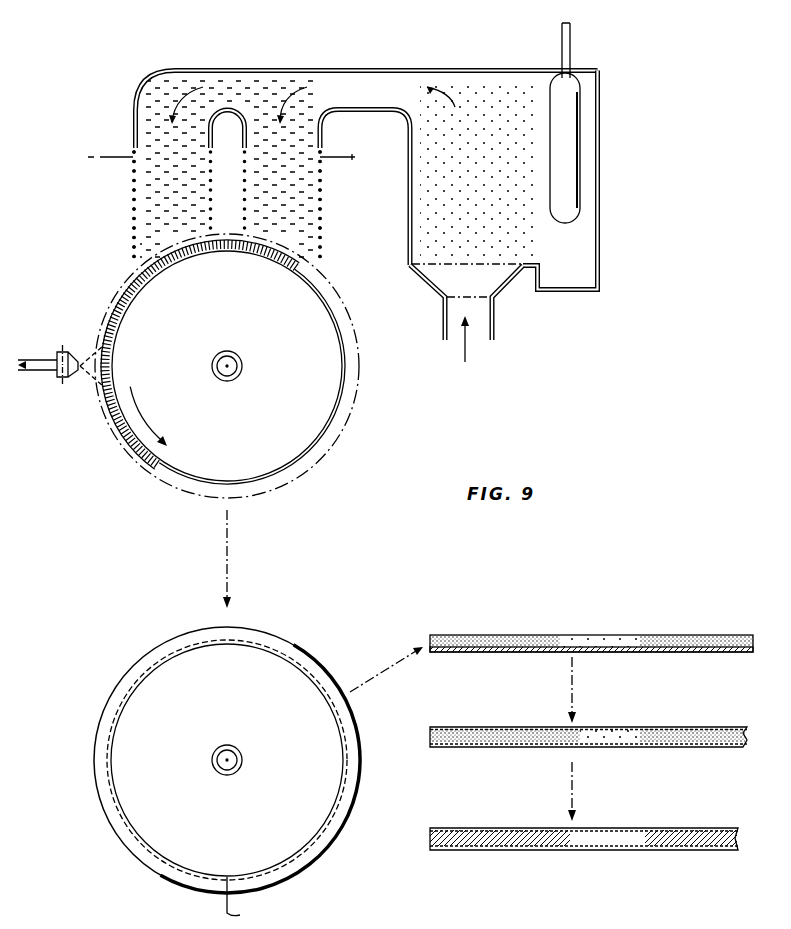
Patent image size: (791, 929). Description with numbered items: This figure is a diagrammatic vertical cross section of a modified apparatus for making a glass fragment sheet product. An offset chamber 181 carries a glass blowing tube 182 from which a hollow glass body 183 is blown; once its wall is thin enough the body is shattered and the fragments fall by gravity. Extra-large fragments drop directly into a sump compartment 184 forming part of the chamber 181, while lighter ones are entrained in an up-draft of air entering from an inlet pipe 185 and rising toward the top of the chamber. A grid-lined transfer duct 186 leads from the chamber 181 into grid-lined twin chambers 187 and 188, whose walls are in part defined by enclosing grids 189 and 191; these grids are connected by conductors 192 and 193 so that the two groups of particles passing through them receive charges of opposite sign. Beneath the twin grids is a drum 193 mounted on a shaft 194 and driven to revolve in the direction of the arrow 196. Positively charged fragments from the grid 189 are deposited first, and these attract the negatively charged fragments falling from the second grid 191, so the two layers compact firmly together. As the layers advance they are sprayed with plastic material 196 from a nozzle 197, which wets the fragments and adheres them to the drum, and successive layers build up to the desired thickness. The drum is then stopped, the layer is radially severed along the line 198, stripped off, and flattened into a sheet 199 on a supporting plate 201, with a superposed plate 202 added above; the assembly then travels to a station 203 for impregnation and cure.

The offset chamber 181 is at (526, 177).
The glass blowing tube 182 is at (570, 53).
The hollow glass body 183 is at (578, 127).
The sump compartment 184 is at (587, 283).
The inlet pipe 185 is at (493, 328).
The grid-lined transfer duct 186 is at (374, 67).
The grid-lined twin chamber 187 is at (323, 143).
The grid-lined twin chamber 188 is at (133, 131).
The enclosing grid 189 is at (320, 220).
The enclosing grid 191 is at (133, 210).
The conductor 192 is at (119, 160).
The drum 193 is at (338, 160).
The shaft 194 is at (232, 357).
The plastic material 196 is at (82, 357).
The nozzle 197 is at (63, 378).
The severing line 198 is at (251, 901).
The sheet 199 is at (508, 615).
The supporting plate 201 is at (518, 653).
The superposed plate 202 is at (678, 705).
The station 203 is at (577, 821).